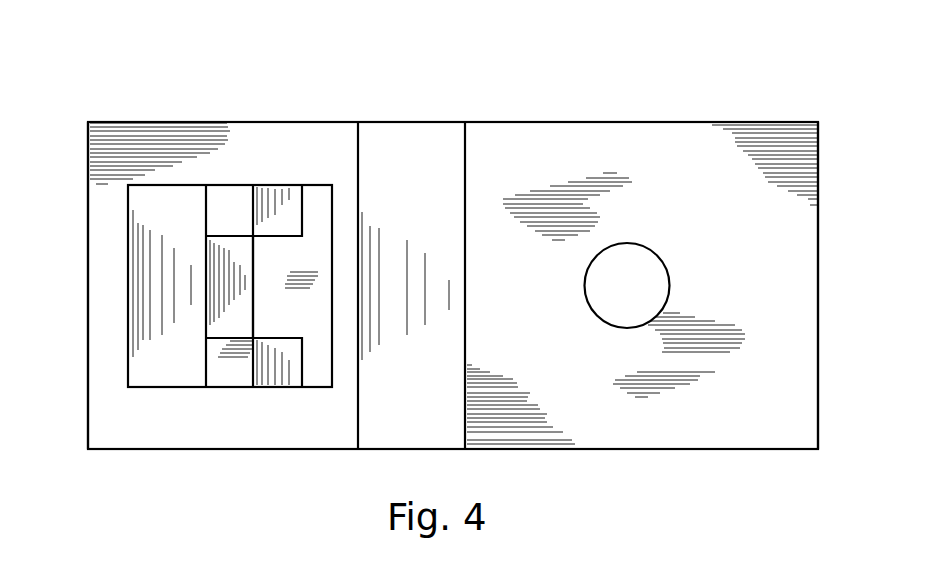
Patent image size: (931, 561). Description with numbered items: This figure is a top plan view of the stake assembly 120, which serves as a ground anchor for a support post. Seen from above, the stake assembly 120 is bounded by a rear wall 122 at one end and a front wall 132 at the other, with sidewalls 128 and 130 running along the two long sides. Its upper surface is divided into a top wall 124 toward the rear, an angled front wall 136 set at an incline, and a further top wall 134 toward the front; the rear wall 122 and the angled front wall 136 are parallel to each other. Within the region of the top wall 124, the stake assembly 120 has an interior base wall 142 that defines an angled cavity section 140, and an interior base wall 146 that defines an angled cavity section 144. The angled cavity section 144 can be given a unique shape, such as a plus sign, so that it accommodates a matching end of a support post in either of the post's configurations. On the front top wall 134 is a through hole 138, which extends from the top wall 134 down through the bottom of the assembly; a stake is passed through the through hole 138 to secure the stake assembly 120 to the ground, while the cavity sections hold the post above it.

The stake assembly 120 is at (178, 110).
The rear wall 122 is at (88, 416).
The top wall 124 is at (281, 150).
The sidewall 128 is at (637, 449).
The sidewall 130 is at (599, 122).
The front wall 132 is at (818, 427).
The top wall 134 is at (760, 241).
The angled front wall 136 is at (412, 152).
The through hole 138 is at (645, 250).
The angled cavity section 140 is at (235, 378).
The interior base wall 142 is at (245, 213).
The angled cavity section 144 is at (270, 330).
The interior base wall 146 is at (322, 323).